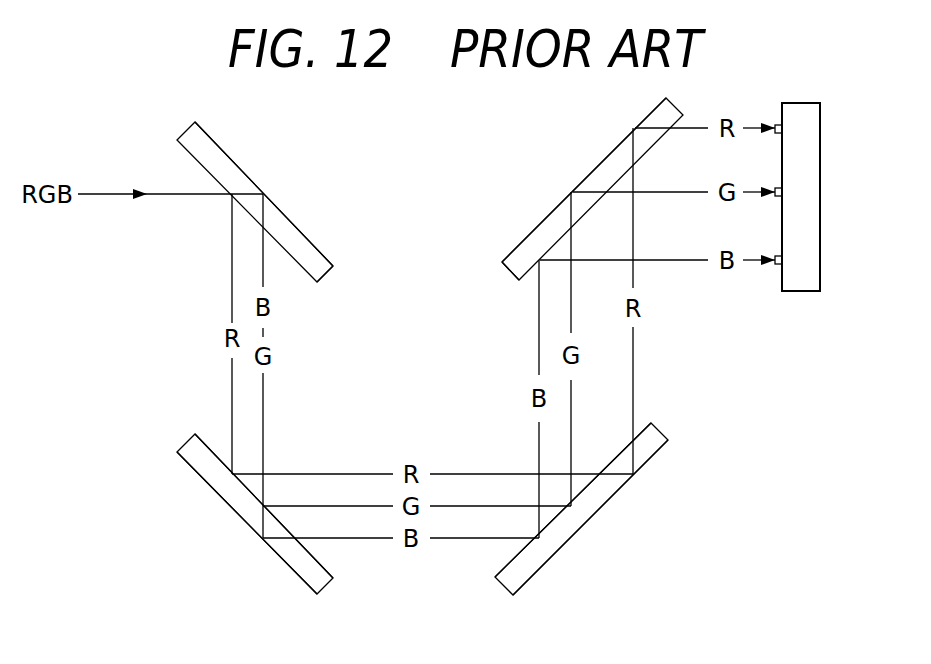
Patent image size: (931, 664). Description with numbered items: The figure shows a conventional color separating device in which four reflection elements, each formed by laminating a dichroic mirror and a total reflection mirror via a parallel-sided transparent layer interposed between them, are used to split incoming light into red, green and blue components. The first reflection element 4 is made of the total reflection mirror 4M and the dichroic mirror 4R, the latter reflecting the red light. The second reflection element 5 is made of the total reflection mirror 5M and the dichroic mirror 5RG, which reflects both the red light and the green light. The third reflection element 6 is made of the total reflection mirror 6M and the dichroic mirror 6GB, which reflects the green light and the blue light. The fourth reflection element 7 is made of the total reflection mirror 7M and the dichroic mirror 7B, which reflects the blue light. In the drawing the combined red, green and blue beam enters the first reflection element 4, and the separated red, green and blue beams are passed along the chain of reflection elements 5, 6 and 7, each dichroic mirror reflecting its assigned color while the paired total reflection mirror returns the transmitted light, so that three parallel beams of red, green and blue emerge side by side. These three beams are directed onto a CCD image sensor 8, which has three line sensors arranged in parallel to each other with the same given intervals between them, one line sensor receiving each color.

The reflection element 4 is at (240, 168).
The total reflection mirror 4M is at (323, 253).
The dichroic mirror 4R is at (300, 270).
The reflection element 5 is at (238, 513).
The dichroic mirror 5RG is at (325, 567).
The total reflection mirror 5M is at (298, 580).
The reflection element 6 is at (600, 510).
The dichroic mirror 6GB is at (642, 425).
The total reflection mirror 6M is at (625, 485).
The reflection element 7 is at (555, 203).
The total reflection mirror 7M is at (652, 107).
The dichroic mirror 7B is at (527, 275).
The CCD image sensor 8 is at (822, 207).